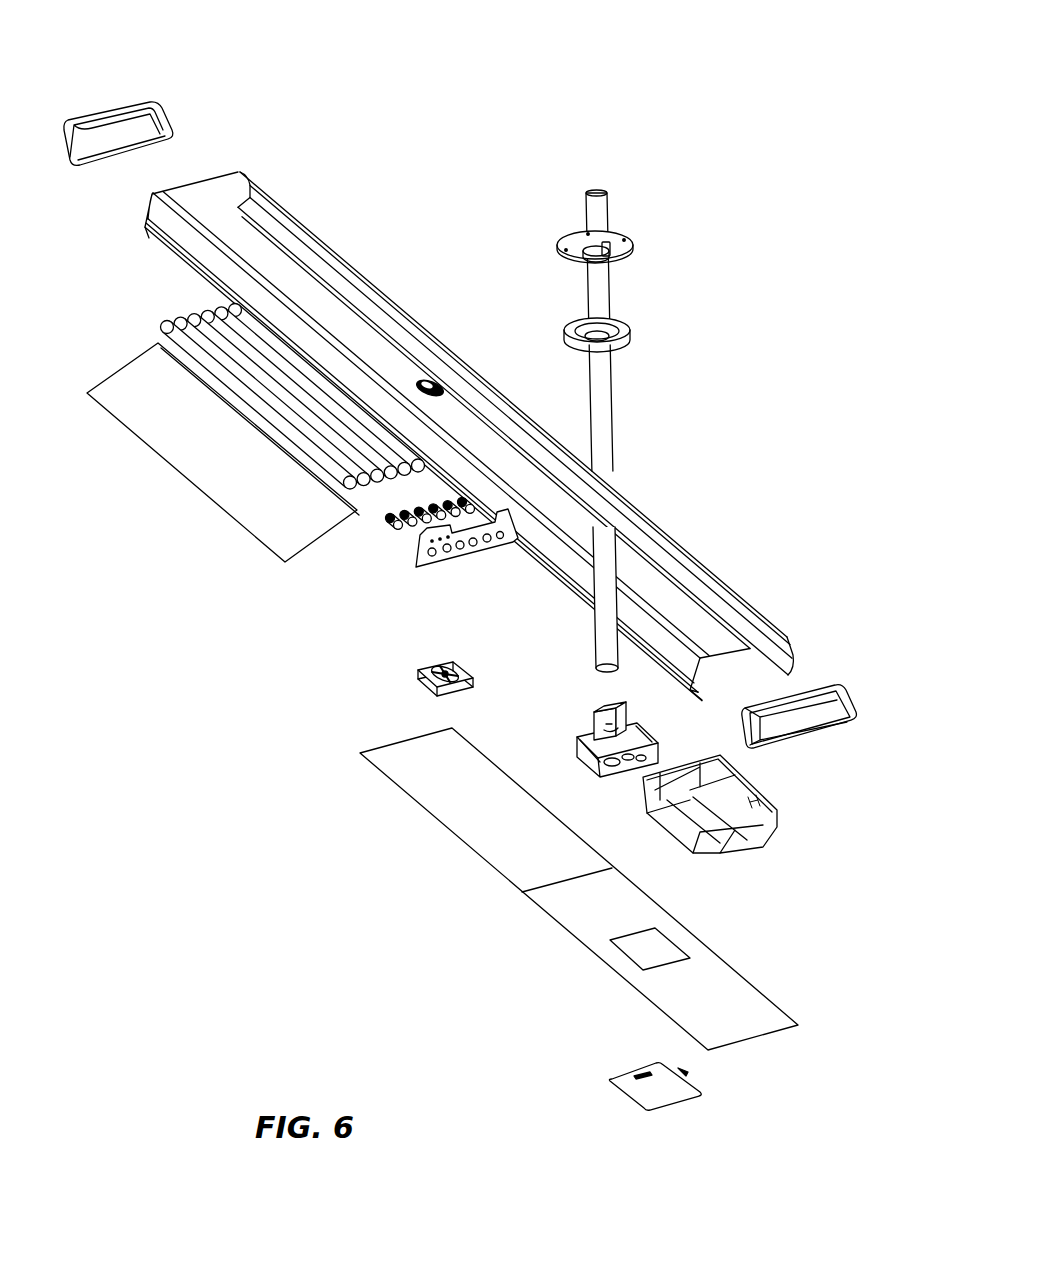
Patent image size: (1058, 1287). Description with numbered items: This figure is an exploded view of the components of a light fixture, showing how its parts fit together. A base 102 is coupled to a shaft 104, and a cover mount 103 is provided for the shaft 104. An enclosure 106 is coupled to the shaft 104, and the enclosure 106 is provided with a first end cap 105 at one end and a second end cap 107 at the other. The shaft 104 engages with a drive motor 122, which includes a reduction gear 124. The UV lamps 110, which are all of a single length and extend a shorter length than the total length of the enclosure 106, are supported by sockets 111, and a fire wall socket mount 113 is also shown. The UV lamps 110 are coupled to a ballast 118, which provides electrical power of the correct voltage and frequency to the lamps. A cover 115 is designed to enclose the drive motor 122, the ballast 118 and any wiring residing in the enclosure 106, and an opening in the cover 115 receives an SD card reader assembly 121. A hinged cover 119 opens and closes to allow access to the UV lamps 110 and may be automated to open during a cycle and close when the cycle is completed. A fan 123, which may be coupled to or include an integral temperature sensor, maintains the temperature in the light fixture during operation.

The base 102 is at (638, 223).
The cover mount 103 is at (618, 337).
The shaft 104 is at (596, 203).
The first end cap 105 is at (122, 110).
The enclosure 106 is at (570, 522).
The second end cap 107 is at (817, 713).
The UV lamps 110 is at (165, 323).
The sockets 111 is at (380, 526).
The fire wall socket mount 113 is at (432, 540).
The cover 115 is at (577, 850).
The ballast 118 is at (770, 813).
The hinged cover 119 is at (200, 433).
The SD card reader assembly 121 is at (685, 1090).
The drive motor 122 is at (583, 736).
The fan 123 is at (437, 697).
The reduction gear 124 is at (593, 728).